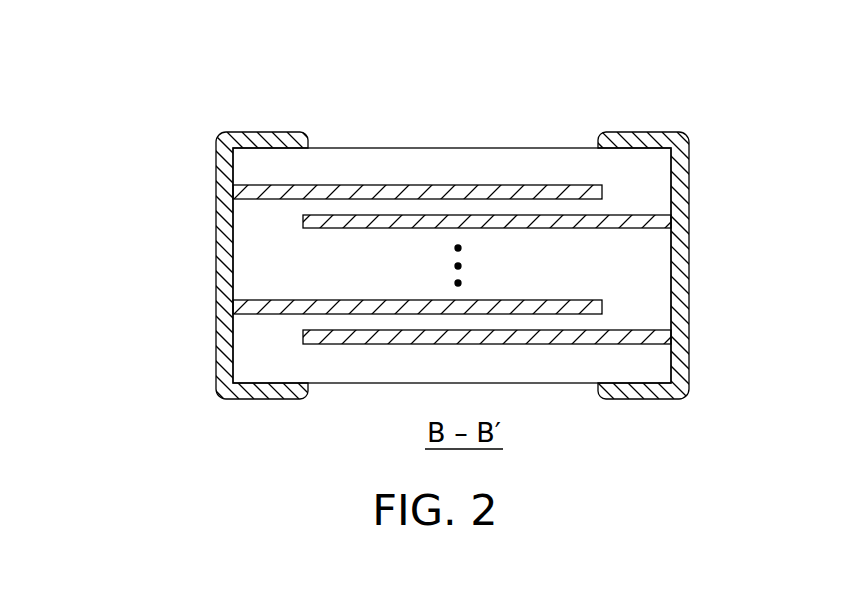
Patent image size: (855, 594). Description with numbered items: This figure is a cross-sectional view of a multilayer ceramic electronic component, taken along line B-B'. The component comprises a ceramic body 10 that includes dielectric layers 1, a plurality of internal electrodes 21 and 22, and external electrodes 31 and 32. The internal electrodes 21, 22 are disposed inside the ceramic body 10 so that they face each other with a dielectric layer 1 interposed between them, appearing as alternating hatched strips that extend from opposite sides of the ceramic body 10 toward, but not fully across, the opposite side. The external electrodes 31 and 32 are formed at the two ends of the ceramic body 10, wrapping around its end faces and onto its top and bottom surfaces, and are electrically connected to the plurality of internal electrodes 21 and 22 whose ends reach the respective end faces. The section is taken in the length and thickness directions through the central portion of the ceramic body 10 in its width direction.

The dielectric layer 1 is at (427, 214).
The ceramic body 10 is at (407, 147).
The internal electrode 21 is at (240, 190).
The internal electrode 22 is at (647, 337).
The external electrode 31 is at (265, 132).
The external electrode 32 is at (645, 132).